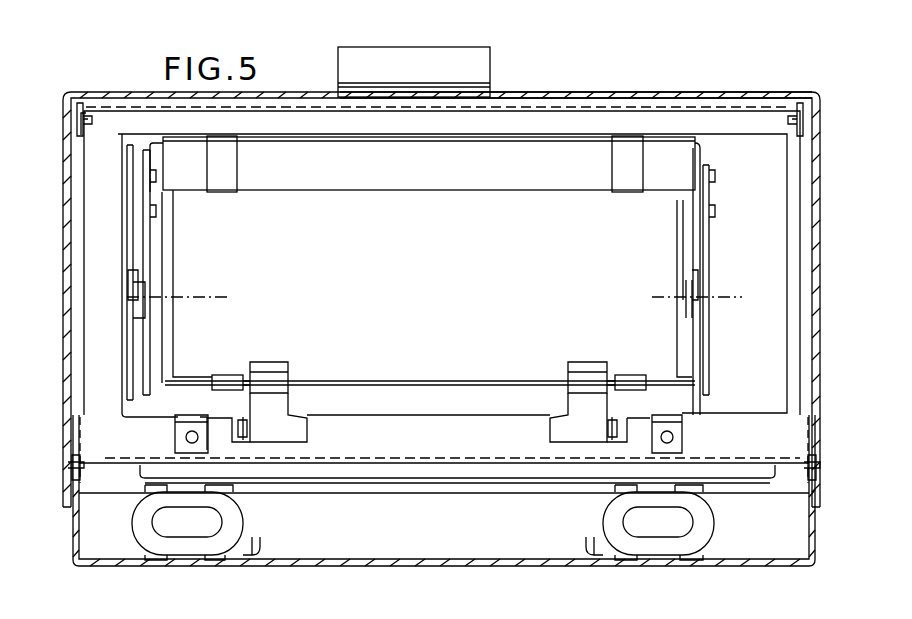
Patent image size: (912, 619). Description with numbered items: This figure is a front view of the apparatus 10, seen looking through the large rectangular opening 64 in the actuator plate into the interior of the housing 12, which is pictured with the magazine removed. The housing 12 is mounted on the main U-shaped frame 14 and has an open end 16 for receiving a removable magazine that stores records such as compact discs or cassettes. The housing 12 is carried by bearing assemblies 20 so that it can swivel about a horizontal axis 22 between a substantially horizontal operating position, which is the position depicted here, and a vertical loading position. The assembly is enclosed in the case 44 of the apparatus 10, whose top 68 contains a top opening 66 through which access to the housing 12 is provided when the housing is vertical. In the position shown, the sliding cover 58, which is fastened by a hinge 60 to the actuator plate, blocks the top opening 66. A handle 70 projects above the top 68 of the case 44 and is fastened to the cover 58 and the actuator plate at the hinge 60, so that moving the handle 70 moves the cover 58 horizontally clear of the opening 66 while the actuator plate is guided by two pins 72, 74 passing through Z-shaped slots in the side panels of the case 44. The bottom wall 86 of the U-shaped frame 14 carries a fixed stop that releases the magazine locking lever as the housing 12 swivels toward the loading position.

The apparatus 10 is at (828, 346).
The housing 12 is at (702, 250).
The main U-shaped frame 14 is at (709, 357).
The open end 16 is at (690, 194).
The bearing assemblies 20 is at (720, 327).
The horizontal axis 22 is at (217, 297).
The case 44 is at (815, 234).
The sliding cover 58 is at (682, 106).
The hinge 60 is at (95, 121).
The large rectangular opening 64 is at (783, 172).
The top opening 66 is at (708, 98).
The top 68 is at (767, 93).
The handle 70 is at (485, 72).
The pin 72 is at (72, 460).
The pin 74 is at (822, 462).
The bottom wall 86 is at (388, 478).